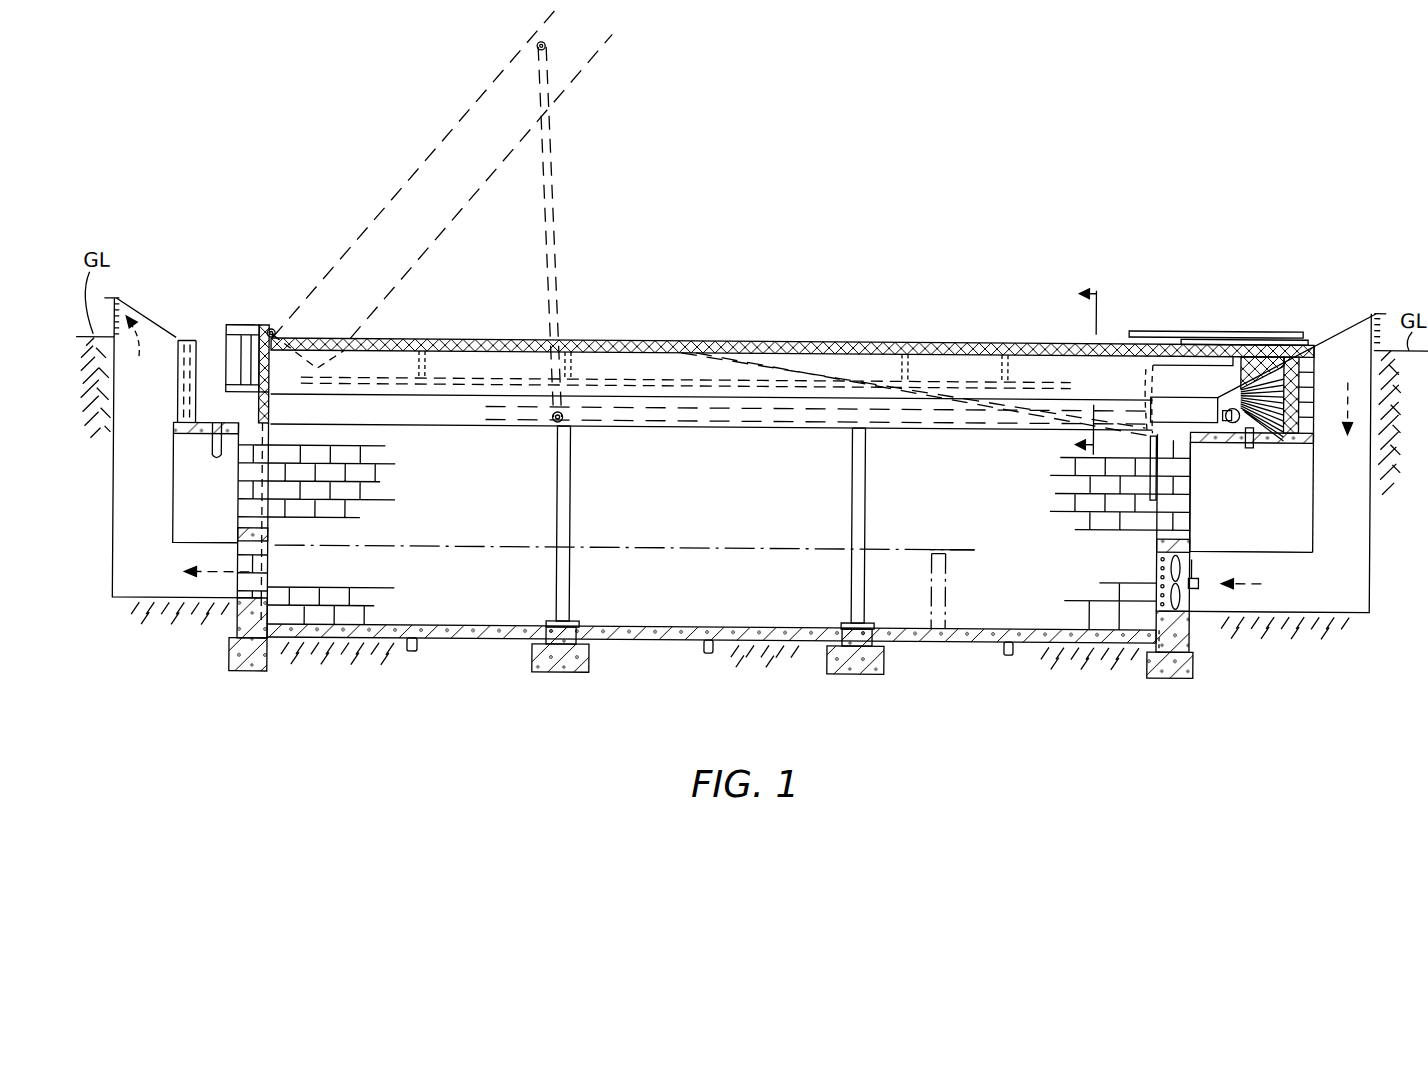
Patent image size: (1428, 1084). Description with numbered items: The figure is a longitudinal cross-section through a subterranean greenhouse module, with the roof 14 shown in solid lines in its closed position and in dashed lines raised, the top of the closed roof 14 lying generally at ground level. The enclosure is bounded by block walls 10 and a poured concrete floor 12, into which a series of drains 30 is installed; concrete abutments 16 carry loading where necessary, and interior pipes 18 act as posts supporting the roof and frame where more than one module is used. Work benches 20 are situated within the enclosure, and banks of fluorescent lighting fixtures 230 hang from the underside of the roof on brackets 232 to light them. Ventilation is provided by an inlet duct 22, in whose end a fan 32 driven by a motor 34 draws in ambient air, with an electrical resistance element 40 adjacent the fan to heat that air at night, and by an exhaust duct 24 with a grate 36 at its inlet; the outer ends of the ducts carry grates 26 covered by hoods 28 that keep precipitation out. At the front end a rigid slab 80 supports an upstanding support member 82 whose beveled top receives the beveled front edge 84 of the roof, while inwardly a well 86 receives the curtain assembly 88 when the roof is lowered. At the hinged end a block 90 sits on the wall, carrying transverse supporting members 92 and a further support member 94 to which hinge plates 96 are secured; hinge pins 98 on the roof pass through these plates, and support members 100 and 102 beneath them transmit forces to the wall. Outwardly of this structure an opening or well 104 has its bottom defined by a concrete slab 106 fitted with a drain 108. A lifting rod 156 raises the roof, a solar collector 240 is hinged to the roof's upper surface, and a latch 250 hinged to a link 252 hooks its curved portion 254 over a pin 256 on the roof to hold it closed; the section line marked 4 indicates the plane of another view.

The section line 4- 4 is at (1074, 368).
The walls 10 is at (238, 510).
The floor 12 is at (665, 627).
The roof 14 is at (447, 218).
The concrete abutments 16 is at (268, 672).
The interior pipes 18 is at (572, 480).
The work benches 20 is at (665, 547).
The inlet duct 22 is at (1372, 517).
The exhaust duct 24 is at (125, 583).
The grate 26 is at (121, 310).
The shrouds or hoods 28 is at (153, 330).
The drains 30 is at (412, 654).
The fan 32 is at (1172, 592).
The motor 34 is at (1196, 574).
The grate 36 is at (266, 574).
The electrical resistance element 40 is at (1150, 622).
The rigid slab 80 is at (1270, 440).
The support member 82 is at (1299, 378).
The beveled front edge 84 is at (1250, 336).
The well 86 is at (1248, 441).
The curtain assembly 88 is at (1258, 447).
The block 90 is at (263, 400).
The supporting members 92 is at (241, 352).
The support member 94 is at (244, 338).
The hinge plates 96 is at (257, 328).
The hinge pins 98 is at (277, 345).
The support member 100 is at (262, 392).
The bottom support member 102 is at (267, 428).
The well 104 is at (196, 440).
The concrete slab 106 is at (185, 428).
The drain 108 is at (216, 464).
The lifting rod 156 is at (560, 302).
The fluorescent lighting fixtures 230 is at (632, 378).
The brackets 232 is at (428, 364).
The solar collector 240 is at (1162, 328).
The latch 250 is at (1152, 476).
The link 252 is at (1151, 444).
The curved portion 254 is at (1160, 368).
The pin 256 is at (1157, 406).